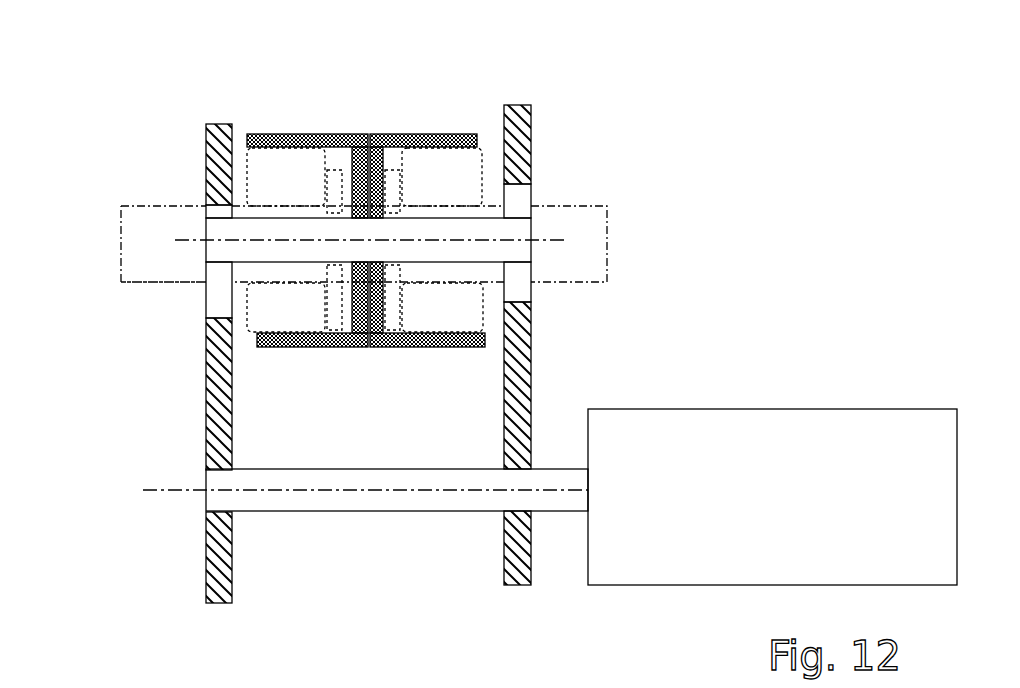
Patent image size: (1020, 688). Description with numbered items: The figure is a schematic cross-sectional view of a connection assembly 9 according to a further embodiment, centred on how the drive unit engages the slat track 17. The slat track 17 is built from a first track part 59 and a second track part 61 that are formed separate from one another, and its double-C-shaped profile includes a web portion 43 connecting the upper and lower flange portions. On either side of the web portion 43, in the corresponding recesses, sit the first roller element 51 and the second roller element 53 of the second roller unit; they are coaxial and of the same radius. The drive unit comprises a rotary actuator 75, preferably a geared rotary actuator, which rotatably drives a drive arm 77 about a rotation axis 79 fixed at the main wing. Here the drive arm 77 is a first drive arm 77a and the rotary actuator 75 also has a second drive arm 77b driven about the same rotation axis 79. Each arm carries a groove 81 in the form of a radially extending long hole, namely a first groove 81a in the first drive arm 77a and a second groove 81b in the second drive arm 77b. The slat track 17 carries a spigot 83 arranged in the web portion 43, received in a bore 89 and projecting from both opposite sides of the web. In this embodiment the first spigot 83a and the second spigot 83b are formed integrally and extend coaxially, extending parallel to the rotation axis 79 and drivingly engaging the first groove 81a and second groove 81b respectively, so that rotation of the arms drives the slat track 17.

The connection assembly 9 is at (158, 82).
The slat track 17 is at (363, 94).
The first track part 59 is at (300, 133).
The second track part 61 is at (422, 134).
The web portion 43 is at (383, 192).
The first roller element 51 is at (280, 191).
The second roller element 53 is at (412, 324).
The groove 81 is at (389, 259).
The first groove 81a is at (218, 304).
The second groove 81b is at (518, 273).
The drive arm 77 is at (290, 354).
The first drive arm 77a is at (205, 408).
The second drive arm 77b is at (503, 430).
The rotation axis 79 is at (193, 492).
The spigot 83 is at (371, 325).
The first spigot 83a is at (268, 249).
The second spigot 83b is at (445, 249).
The bore 89 is at (385, 264).
The rotary actuator 75 is at (766, 508).